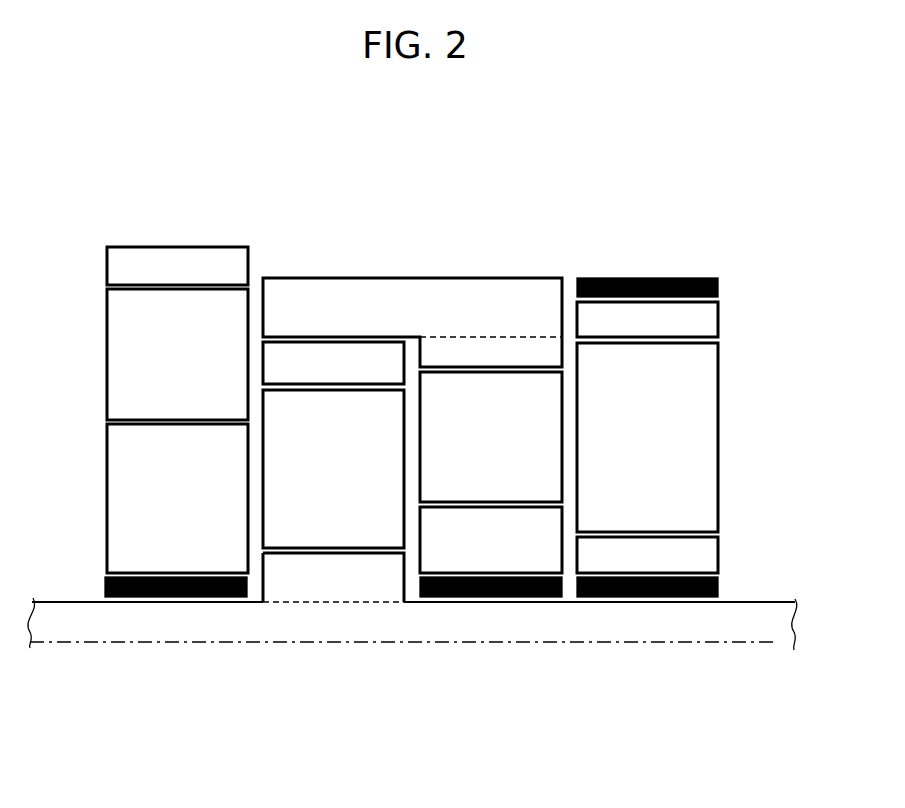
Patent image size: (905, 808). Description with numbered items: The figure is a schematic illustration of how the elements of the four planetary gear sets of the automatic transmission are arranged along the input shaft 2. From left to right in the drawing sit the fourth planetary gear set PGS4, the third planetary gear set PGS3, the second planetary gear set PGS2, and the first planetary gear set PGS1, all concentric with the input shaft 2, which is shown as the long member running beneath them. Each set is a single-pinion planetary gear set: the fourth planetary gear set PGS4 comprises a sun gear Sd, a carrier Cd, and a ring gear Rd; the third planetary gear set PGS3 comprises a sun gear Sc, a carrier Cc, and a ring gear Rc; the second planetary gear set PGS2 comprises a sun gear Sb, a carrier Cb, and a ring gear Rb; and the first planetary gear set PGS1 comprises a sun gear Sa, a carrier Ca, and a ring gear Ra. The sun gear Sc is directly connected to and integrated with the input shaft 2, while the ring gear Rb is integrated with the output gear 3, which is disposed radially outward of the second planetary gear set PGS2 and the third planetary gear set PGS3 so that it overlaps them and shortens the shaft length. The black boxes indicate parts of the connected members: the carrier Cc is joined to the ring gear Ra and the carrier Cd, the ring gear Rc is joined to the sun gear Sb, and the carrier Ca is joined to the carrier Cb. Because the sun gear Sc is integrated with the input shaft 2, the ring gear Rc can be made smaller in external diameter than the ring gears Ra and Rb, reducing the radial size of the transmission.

The input shaft 2 is at (776, 632).
The output gear 3 is at (413, 290).
The ring gear Rd is at (118, 266).
The carrier Cd is at (118, 333).
The sun gear Sd is at (118, 492).
The fourth planetary gear set PGS4 is at (176, 604).
The ring gear Rc is at (338, 355).
The carrier Cc is at (390, 441).
The sun gear Sc is at (305, 580).
The third planetary gear set PGS3 is at (331, 604).
The ring gear Rb is at (488, 350).
The carrier Cb is at (550, 425).
The sun gear Sb is at (500, 517).
The second planetary gear set PGS2 is at (491, 604).
The ring gear Ra is at (708, 320).
The carrier Ca is at (710, 425).
The sun gear Sa is at (710, 552).
The first planetary gear set PGS1 is at (647, 604).